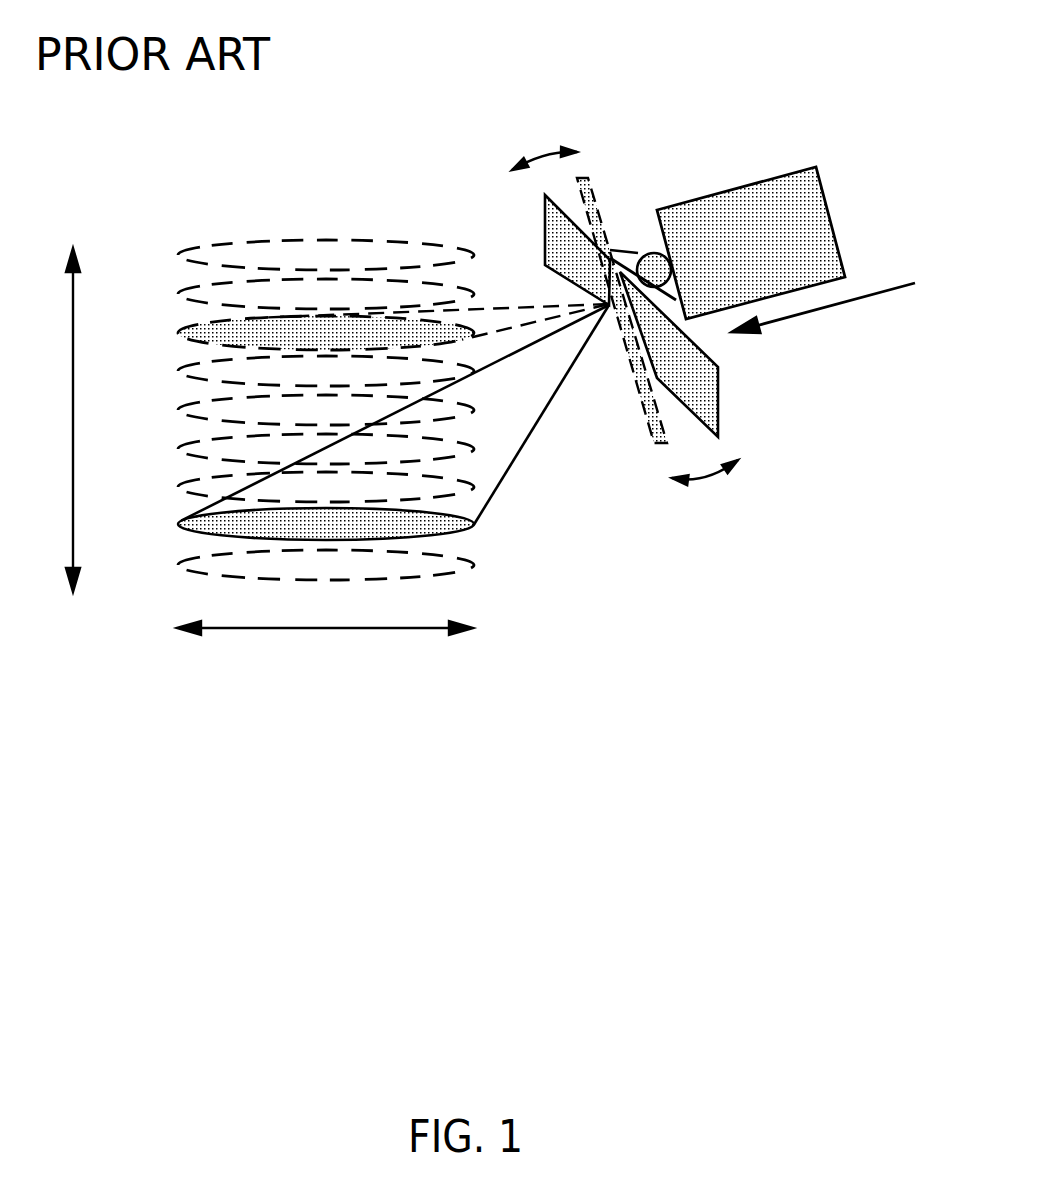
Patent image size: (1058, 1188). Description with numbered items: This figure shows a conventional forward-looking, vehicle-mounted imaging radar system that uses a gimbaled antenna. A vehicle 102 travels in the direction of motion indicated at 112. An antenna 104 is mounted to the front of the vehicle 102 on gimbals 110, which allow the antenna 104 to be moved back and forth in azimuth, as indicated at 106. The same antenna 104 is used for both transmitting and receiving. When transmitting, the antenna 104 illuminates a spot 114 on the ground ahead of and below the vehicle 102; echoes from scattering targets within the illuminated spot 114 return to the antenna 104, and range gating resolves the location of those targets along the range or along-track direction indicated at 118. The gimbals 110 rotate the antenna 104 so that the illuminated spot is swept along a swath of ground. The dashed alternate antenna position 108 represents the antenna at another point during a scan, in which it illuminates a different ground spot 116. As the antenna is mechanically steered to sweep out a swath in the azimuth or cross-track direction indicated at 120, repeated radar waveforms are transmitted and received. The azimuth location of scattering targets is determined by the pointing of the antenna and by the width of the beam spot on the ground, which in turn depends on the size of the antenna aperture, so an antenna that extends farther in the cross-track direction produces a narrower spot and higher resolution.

The vehicle 102 is at (751, 204).
The antenna 104 is at (519, 242).
The azimuth motion direction 106 is at (589, 250).
The alternate antenna position 108 is at (647, 381).
The gimbals 110 is at (631, 215).
The direction of vehicle motion 112 is at (823, 341).
The illuminated spot 114 is at (354, 453).
The ground spot 116 is at (354, 358).
The range or along-track direction 118 is at (325, 662).
The azimuth or cross-track direction 120 is at (114, 414).